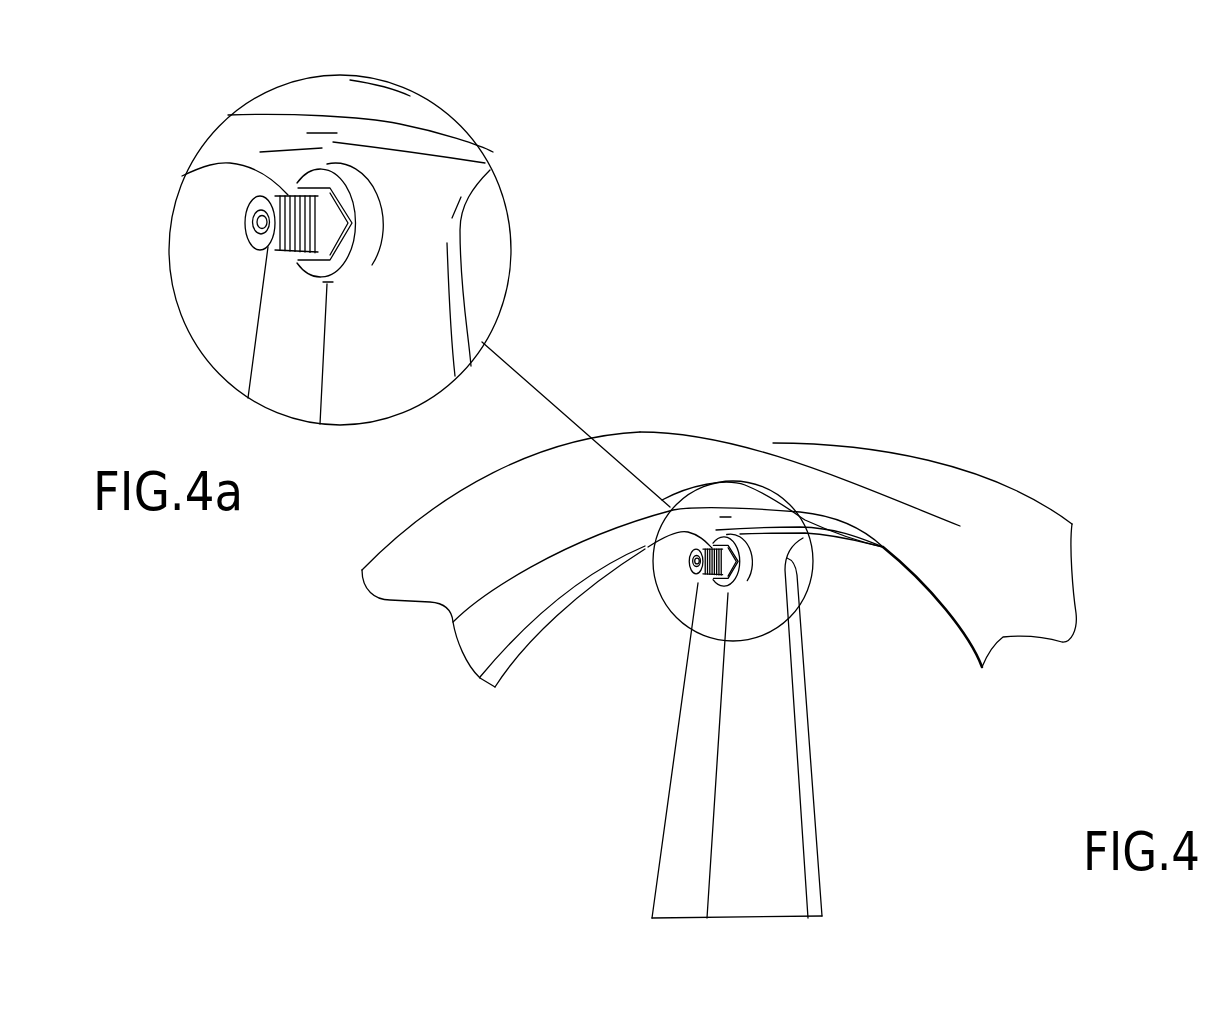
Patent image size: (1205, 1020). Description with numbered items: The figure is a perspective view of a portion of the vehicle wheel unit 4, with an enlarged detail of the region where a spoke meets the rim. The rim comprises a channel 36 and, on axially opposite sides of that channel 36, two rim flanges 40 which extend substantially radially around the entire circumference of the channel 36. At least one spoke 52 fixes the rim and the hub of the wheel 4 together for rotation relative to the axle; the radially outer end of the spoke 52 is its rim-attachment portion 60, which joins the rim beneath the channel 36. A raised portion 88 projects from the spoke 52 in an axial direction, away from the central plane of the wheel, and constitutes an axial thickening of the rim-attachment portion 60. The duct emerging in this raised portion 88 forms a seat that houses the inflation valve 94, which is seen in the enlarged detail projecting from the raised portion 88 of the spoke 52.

In FIG. 4, the vehicle wheel unit 4 is at (730, 589).
In FIG. 4, the channel 36 is at (905, 510).
In FIG. 4, the rim flange 40 is at (1007, 517).
In FIG. 4A, the spoke 52 is at (238, 326).
In FIG. 4, the spoke 52 is at (697, 747).
In FIG. 4A, the rim-attachment portion 60 is at (427, 232).
In FIG. 4A, the raised portion 88 is at (374, 208).
In FIG. 4A, the inflation valve 94 is at (292, 172).